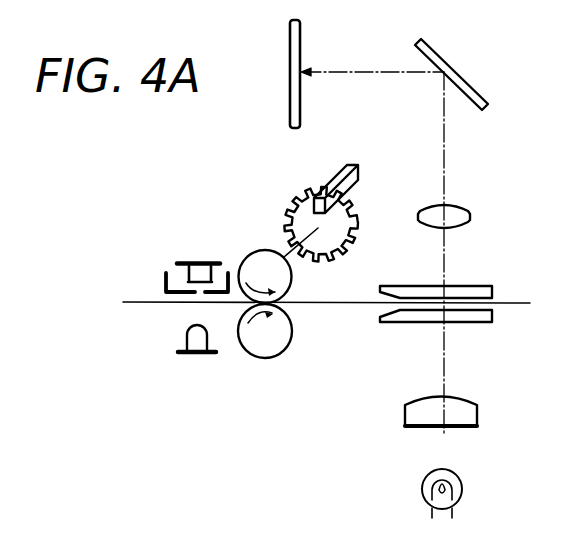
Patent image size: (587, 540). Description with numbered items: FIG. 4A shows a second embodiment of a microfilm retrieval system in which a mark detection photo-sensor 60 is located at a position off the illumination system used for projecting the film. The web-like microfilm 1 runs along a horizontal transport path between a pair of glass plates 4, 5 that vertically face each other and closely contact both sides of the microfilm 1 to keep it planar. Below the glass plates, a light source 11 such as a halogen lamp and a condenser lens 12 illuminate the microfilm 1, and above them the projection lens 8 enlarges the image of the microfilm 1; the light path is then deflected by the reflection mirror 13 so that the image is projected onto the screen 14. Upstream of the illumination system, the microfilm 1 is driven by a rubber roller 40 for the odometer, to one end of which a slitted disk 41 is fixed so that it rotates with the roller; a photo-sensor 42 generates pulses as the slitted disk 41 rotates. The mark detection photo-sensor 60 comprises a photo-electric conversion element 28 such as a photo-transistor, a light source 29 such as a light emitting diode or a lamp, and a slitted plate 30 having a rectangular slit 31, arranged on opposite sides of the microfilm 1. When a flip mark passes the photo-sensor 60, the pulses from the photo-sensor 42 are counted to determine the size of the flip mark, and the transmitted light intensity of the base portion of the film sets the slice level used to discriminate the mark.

The microfilm 1 is at (337, 302).
The glass plate 4 is at (491, 287).
The glass plate 5 is at (492, 320).
The projection lens 8 is at (472, 213).
The light source 11 is at (462, 480).
The condenser lens 12 is at (479, 411).
The reflection mirror 13 is at (457, 77).
The screen 14 is at (300, 34).
The photo-electric conversion element 28 is at (194, 260).
The light source 29 is at (187, 345).
The slitted plate 30 is at (178, 284).
The rectangular slit 31 is at (200, 291).
The rubber roller 40 is at (258, 252).
The slitted disk 41 is at (358, 210).
The photo-sensor 42 is at (350, 172).
The mark detection photo-sensor 60 is at (159, 306).